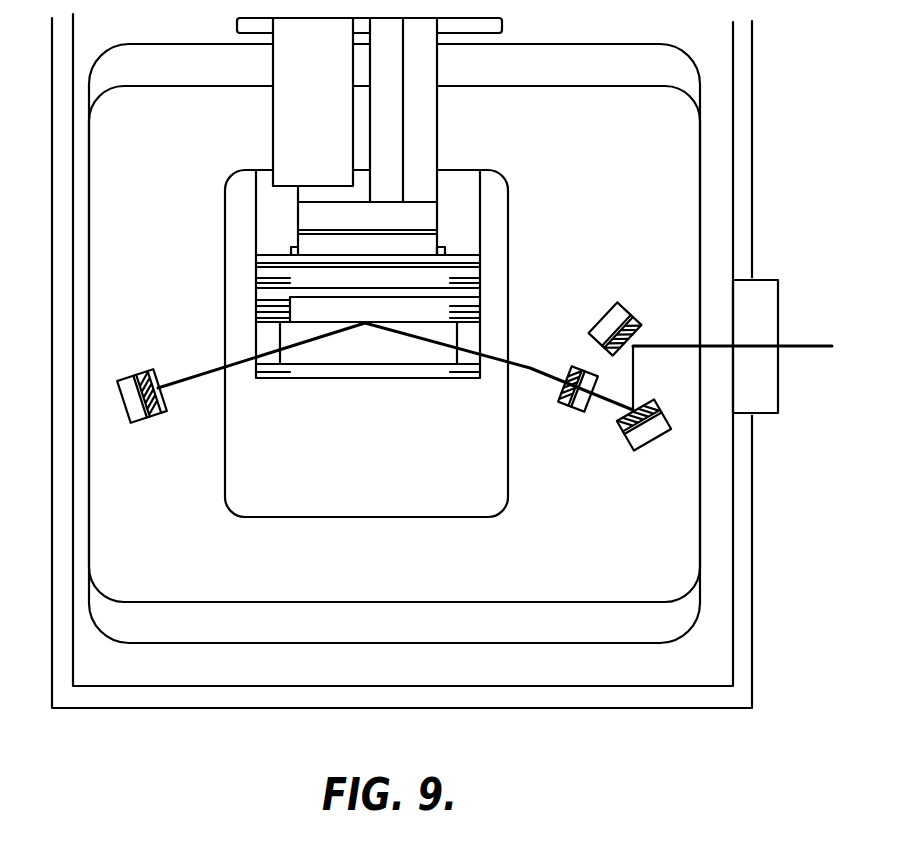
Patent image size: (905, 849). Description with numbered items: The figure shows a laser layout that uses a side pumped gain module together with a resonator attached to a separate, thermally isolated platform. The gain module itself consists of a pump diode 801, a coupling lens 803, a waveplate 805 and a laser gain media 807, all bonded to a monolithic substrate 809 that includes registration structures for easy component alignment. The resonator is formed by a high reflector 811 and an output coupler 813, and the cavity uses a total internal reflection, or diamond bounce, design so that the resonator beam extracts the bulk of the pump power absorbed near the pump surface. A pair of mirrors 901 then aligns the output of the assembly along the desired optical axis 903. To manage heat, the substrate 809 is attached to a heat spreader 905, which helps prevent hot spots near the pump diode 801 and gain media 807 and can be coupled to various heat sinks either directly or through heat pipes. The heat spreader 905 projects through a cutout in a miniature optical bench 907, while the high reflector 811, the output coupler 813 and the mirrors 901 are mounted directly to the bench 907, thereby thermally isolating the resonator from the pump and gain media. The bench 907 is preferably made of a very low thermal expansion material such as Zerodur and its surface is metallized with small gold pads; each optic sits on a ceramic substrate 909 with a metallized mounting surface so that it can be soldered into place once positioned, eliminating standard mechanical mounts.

The pump diode 801 is at (427, 248).
The coupling lens 803 is at (483, 263).
The waveplate 805 is at (467, 295).
The laser gain media 807 is at (385, 352).
The monolithic substrate 809 is at (467, 195).
The high reflector 811 is at (155, 412).
The output coupler 813 is at (560, 410).
The mirrors 901 is at (640, 323).
The optical axis 903 is at (817, 343).
The heat spreader 905 is at (482, 497).
The miniature optical bench 907 is at (678, 145).
The ceramic substrates 909 is at (595, 372).